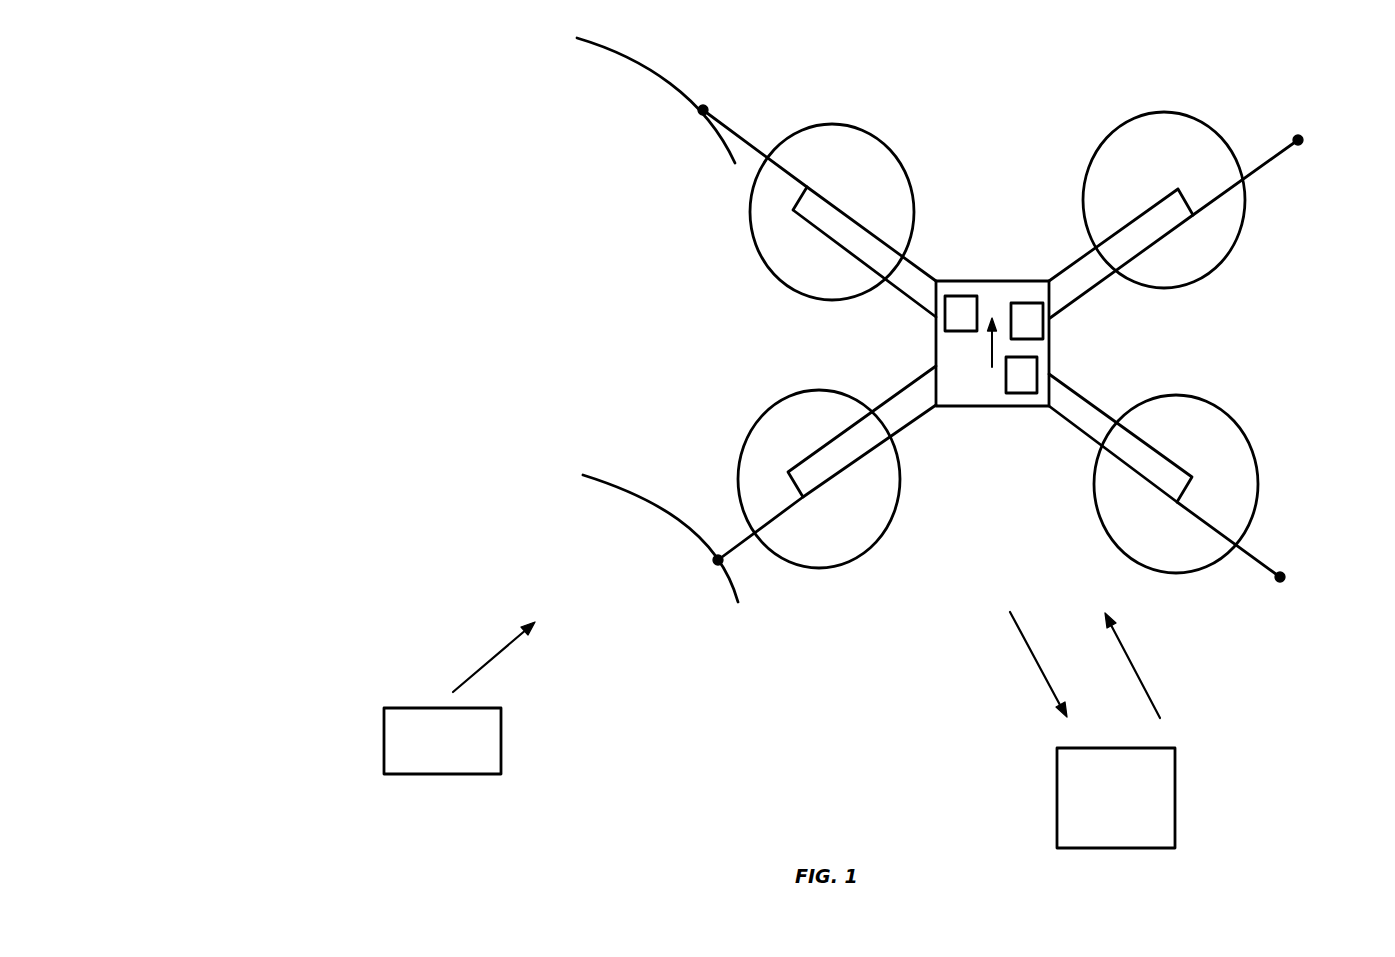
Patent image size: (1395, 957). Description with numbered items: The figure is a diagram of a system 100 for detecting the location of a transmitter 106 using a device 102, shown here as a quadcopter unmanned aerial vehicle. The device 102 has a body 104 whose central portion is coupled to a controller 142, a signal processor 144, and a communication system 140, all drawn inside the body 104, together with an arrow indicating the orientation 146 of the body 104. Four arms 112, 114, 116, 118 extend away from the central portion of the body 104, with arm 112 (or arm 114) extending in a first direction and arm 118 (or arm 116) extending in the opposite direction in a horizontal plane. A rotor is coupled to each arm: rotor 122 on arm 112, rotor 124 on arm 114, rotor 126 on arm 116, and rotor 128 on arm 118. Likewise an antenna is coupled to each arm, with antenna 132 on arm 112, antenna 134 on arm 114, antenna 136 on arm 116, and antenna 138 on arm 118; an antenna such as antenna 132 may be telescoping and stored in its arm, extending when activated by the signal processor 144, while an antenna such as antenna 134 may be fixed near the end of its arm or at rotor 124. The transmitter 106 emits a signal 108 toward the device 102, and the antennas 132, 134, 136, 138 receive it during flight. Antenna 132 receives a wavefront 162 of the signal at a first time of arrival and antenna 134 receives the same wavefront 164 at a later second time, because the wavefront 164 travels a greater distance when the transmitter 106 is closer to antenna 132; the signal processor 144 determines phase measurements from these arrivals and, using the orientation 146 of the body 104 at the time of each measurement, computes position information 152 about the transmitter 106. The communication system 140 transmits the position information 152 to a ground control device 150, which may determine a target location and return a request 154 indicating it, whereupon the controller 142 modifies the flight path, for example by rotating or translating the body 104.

The system 100 is at (308, 108).
The device 102 is at (940, 101).
The body 104 is at (936, 330).
The transmitter 106 is at (442, 741).
The signal 108 is at (452, 657).
The arm 112 is at (916, 420).
The arm 114 is at (924, 306).
The arm 116 is at (1090, 440).
The arm 118 is at (1088, 290).
The rotor 122 is at (826, 568).
The rotor 124 is at (788, 287).
The rotor 126 is at (1137, 562).
The rotor 128 is at (1092, 163).
The antenna 132 is at (713, 565).
The antenna 134 is at (700, 113).
The antenna 136 is at (1278, 581).
The antenna 138 is at (1301, 134).
The communication system 140 is at (1043, 333).
The controller 142 is at (957, 297).
The signal processor 144 is at (1038, 362).
The orientation 146 is at (933, 360).
The control device 150 is at (1116, 798).
The position information 152 is at (933, 664).
The request 154 is at (1183, 665).
The wavefront 162 is at (608, 485).
The wavefront 164 is at (662, 70).